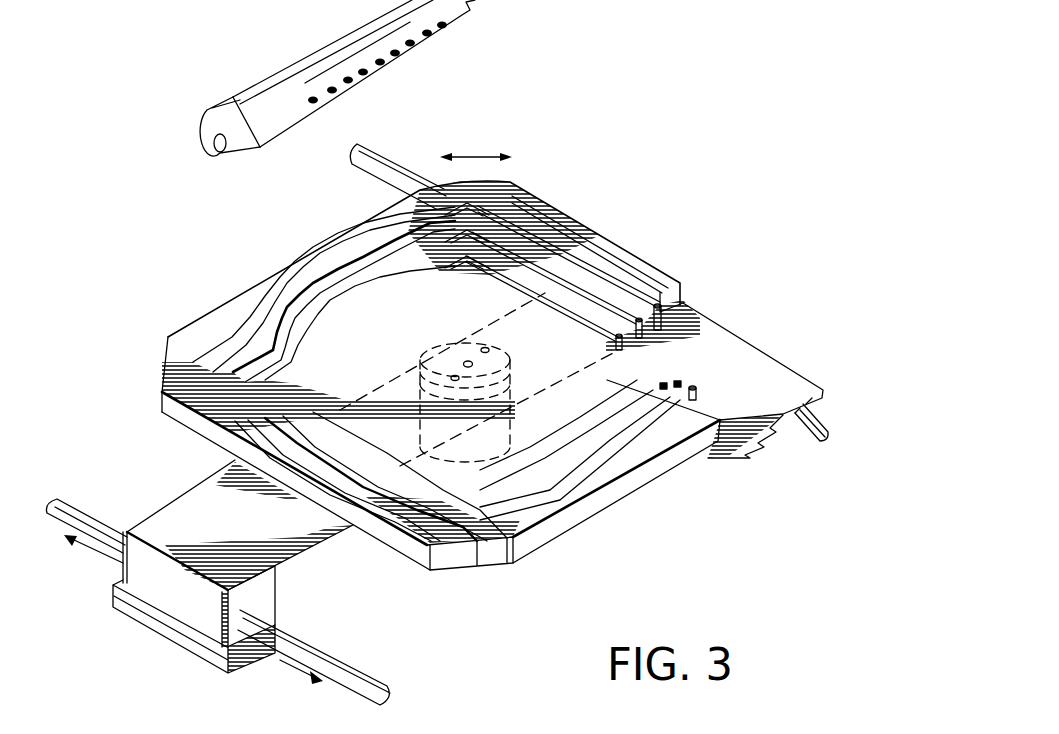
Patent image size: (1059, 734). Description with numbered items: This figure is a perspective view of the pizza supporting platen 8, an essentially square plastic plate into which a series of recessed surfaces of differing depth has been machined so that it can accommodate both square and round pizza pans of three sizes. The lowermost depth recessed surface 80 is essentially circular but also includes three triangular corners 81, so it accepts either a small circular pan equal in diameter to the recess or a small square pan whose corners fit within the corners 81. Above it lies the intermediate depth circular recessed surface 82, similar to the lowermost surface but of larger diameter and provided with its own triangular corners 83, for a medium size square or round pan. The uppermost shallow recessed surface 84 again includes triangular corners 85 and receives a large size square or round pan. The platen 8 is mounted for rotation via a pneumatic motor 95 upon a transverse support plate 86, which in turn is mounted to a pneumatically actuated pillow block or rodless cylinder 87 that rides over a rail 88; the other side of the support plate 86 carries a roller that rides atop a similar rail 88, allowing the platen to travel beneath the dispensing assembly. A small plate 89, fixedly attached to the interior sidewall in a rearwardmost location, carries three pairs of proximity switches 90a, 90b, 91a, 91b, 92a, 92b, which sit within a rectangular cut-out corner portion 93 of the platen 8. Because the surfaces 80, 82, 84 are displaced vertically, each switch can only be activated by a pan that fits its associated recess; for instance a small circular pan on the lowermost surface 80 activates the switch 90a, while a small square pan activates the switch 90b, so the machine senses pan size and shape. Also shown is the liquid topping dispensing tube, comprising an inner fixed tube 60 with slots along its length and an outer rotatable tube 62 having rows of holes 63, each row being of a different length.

The platen 8 is at (562, 201).
The inner fixed tube 60 is at (210, 114).
The outer rotatable tube 62 is at (298, 73).
The rows of holes 63 is at (440, 45).
The lowermost depth recessed surface 80 is at (395, 332).
The triangular corners 81 is at (297, 364).
The intermediate depth circular recessed surface 82 is at (363, 273).
The triangular corners 83 is at (478, 218).
The uppermost shallow recessed surface 84 is at (292, 296).
The triangular corners 85 is at (513, 192).
The transverse support plate 86 is at (245, 534).
The pneumatically actuated pillow block or rodless cylinder 87 is at (168, 605).
The rail 88 is at (825, 425).
The small plate 89 is at (812, 378).
The proximity switch 90a is at (614, 335).
The proximity switch 90b is at (650, 380).
The proximity switch 91a is at (630, 321).
The proximity switch 91b is at (682, 381).
The proximity switch 92a is at (665, 307).
The proximity switch 92b is at (698, 397).
The rectangular cut-out corner portion 93 is at (692, 329).
The pneumatic motor 95 is at (406, 413).